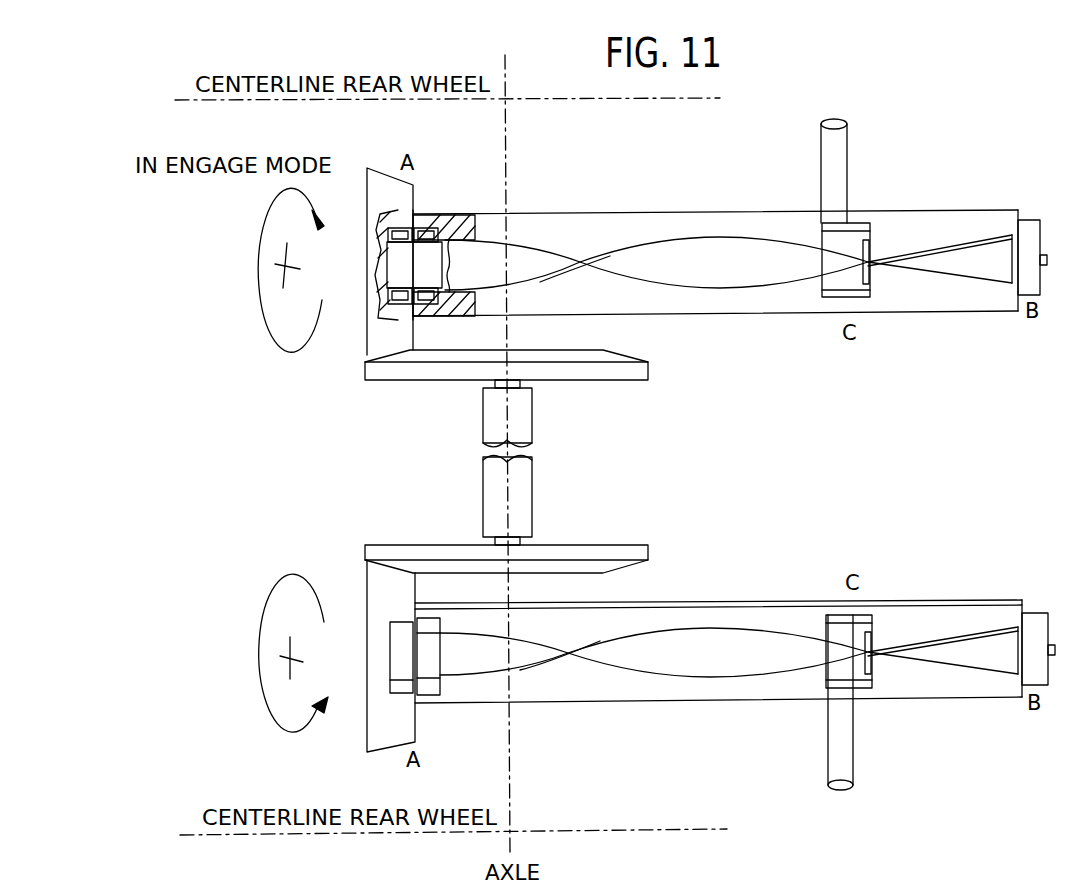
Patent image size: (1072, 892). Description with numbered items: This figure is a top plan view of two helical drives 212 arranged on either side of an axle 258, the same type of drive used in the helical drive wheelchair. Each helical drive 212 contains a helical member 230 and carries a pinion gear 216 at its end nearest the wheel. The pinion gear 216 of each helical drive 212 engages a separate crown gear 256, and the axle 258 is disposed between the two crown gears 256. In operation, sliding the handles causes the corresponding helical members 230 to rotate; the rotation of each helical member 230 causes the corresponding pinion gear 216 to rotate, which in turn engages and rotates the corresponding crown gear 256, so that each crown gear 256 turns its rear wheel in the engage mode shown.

The helical drive 212 is at (631, 210).
The pinion gear 216 is at (393, 208).
The helical member 230 is at (974, 229).
The crown gear 256 is at (362, 381).
The axle 258 is at (848, 160).